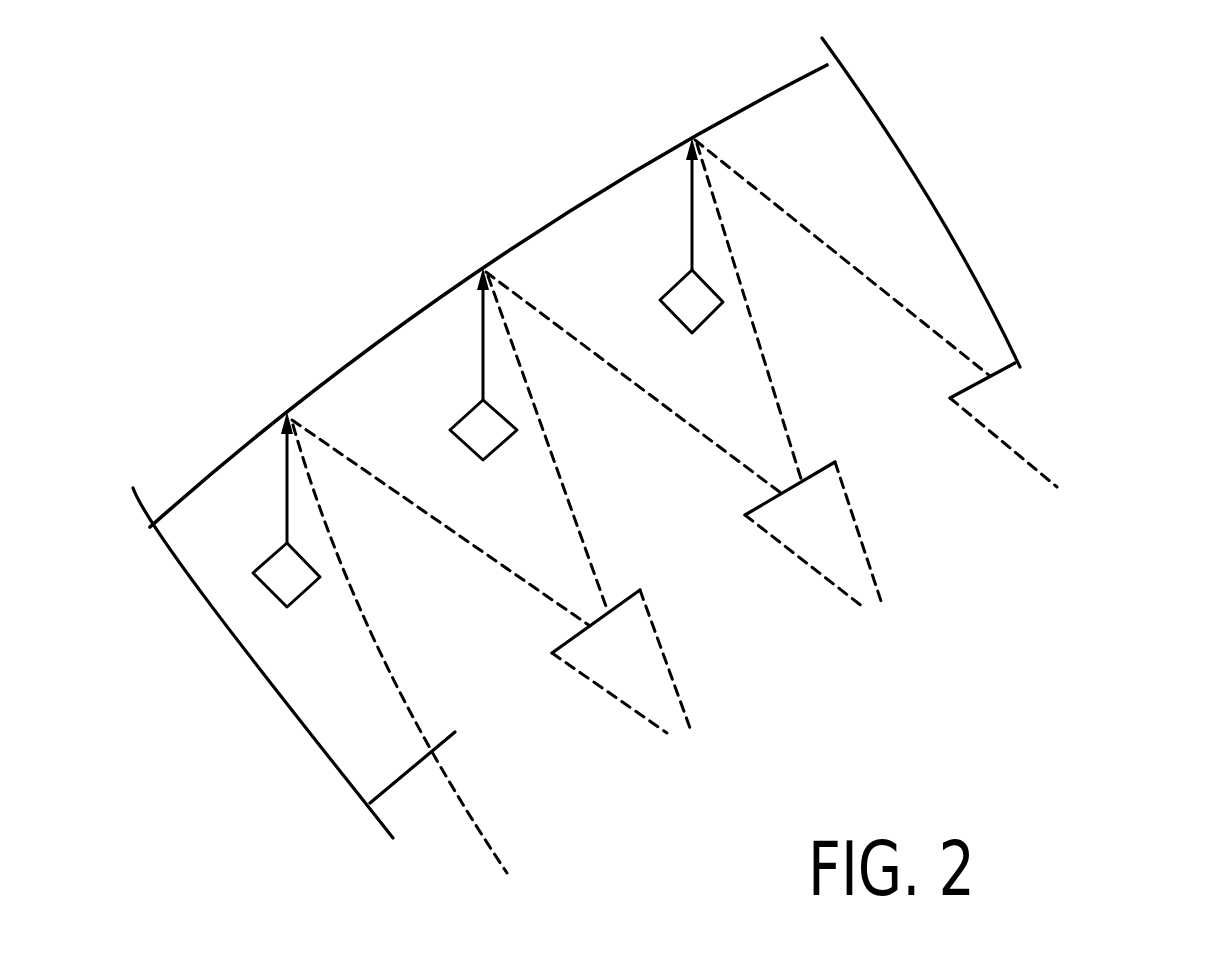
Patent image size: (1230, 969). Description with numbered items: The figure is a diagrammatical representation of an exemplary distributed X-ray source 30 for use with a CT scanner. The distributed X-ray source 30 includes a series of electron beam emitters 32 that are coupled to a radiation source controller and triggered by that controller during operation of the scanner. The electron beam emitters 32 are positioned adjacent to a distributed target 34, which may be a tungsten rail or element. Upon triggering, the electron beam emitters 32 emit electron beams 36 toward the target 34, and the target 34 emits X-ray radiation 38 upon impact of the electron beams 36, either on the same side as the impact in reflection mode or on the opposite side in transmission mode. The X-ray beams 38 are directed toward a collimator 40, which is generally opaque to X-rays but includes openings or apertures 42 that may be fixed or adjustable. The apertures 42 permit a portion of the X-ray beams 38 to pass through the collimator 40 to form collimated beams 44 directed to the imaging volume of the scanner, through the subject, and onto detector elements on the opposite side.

The distributed X-ray source 30 is at (1080, 380).
The electron beam emitters 32 is at (267, 560).
The distributed target 34 is at (218, 462).
The electron beams 36 is at (290, 478).
The X-ray radiation 38 is at (387, 667).
The collimator 40 is at (425, 772).
The apertures 42 is at (475, 703).
The collimated beams 44 is at (533, 780).